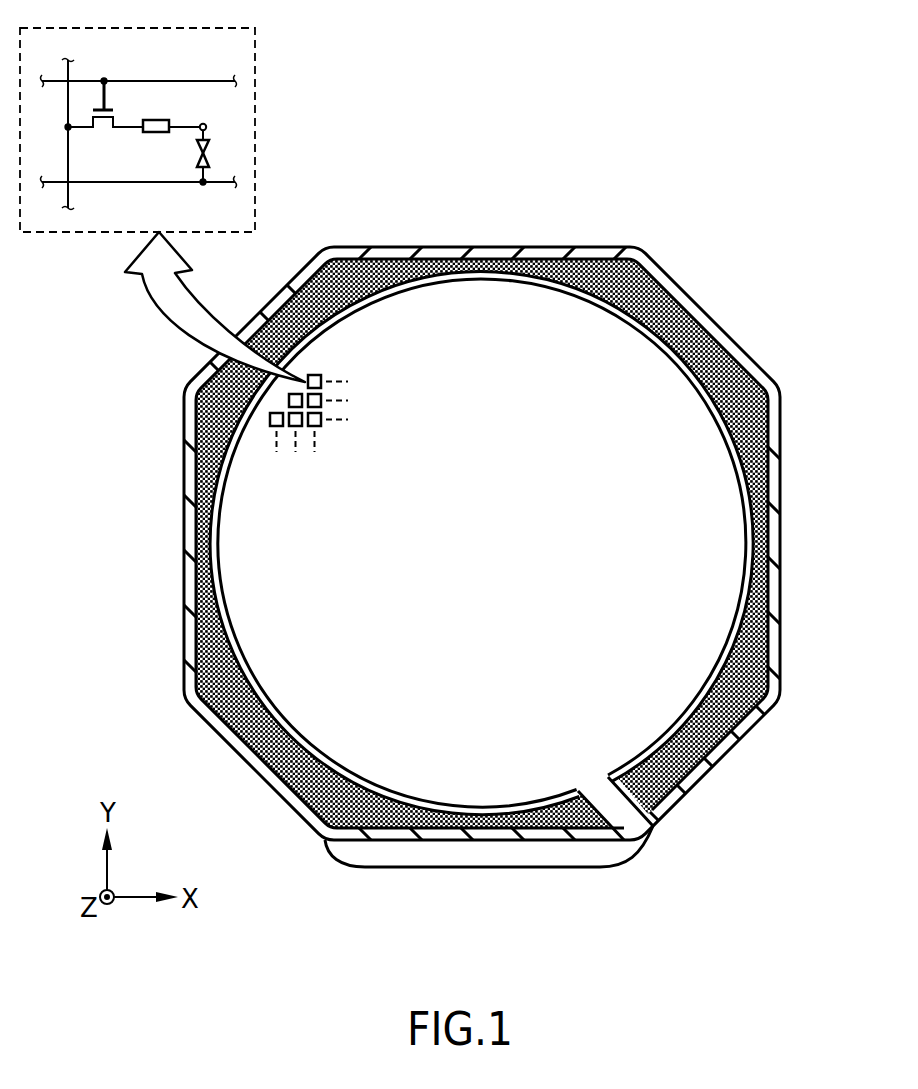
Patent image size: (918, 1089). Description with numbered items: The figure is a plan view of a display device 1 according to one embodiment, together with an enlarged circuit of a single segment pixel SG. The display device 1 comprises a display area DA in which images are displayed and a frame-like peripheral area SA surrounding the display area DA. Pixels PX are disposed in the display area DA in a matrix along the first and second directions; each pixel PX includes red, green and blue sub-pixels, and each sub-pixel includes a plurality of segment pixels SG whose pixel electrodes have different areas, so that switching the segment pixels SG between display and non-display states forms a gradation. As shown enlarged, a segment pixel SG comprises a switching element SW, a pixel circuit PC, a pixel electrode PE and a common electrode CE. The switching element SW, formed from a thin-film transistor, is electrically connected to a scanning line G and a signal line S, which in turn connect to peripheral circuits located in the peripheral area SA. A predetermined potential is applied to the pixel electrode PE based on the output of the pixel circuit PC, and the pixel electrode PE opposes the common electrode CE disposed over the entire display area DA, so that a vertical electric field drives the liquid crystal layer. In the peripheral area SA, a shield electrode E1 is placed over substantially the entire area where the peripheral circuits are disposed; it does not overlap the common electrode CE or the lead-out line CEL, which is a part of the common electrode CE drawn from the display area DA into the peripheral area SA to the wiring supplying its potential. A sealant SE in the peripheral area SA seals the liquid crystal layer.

The display device 1 is at (709, 256).
The display area DA is at (498, 555).
The shield electrode E1 is at (755, 430).
The common electrode CE is at (720, 497).
The sealant SE is at (718, 746).
The lead-out line CEL is at (640, 826).
The peripheral area SA is at (573, 868).
The pixel PX is at (272, 428).
The segment pixel SG is at (257, 63).
The scanning line G is at (42, 76).
The signal line S is at (67, 146).
The switching element SW is at (120, 110).
The pixel circuit PC is at (156, 133).
The pixel electrode PE is at (207, 124).